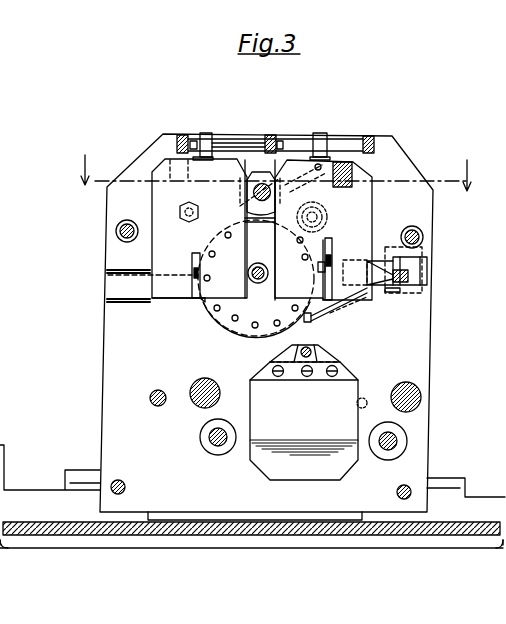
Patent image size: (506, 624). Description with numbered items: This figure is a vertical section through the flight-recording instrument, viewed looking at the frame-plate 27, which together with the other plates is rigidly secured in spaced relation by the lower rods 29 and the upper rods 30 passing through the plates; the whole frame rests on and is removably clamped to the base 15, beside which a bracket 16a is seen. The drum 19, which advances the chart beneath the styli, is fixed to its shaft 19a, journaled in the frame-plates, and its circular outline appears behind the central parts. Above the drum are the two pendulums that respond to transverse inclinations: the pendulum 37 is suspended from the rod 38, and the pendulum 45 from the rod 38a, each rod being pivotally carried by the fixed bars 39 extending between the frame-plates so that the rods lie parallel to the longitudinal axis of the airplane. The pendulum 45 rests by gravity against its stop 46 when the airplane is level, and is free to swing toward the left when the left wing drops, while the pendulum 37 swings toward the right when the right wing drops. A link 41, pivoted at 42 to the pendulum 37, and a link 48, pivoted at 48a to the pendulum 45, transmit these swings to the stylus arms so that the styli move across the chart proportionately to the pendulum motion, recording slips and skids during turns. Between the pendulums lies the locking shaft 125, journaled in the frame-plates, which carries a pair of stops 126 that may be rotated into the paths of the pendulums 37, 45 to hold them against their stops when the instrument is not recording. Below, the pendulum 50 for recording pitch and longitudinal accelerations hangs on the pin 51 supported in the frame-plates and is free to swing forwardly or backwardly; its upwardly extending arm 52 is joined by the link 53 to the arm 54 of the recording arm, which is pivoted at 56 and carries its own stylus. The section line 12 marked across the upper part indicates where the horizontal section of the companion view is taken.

The section line 12- 12 is at (273, 176).
The base 15 is at (235, 536).
The bracket 16a is at (252, 452).
The drum 19 is at (256, 333).
The shaft 19a is at (256, 283).
The frame-plate 27 is at (432, 350).
The lower rods 29 is at (438, 470).
The upper rods 30 is at (447, 238).
The pendulum 37 is at (355, 218).
The rod 38 is at (330, 142).
The rod 38a is at (222, 141).
The fixed bars 39 is at (382, 124).
The link 41 is at (324, 268).
The pivotal connection 42 is at (335, 262).
The pendulum 45 is at (177, 230).
The stop 46 is at (196, 205).
The link 48 is at (192, 272).
The pivotal connection 48a is at (198, 301).
The pendulum 50 is at (308, 412).
The pin 51 is at (311, 350).
The arm 52 is at (314, 322).
The link 53 is at (376, 290).
The arm 54 is at (428, 268).
The pivotal support 56 is at (386, 258).
The shaft 125 is at (262, 188).
The stops 126 is at (318, 188).